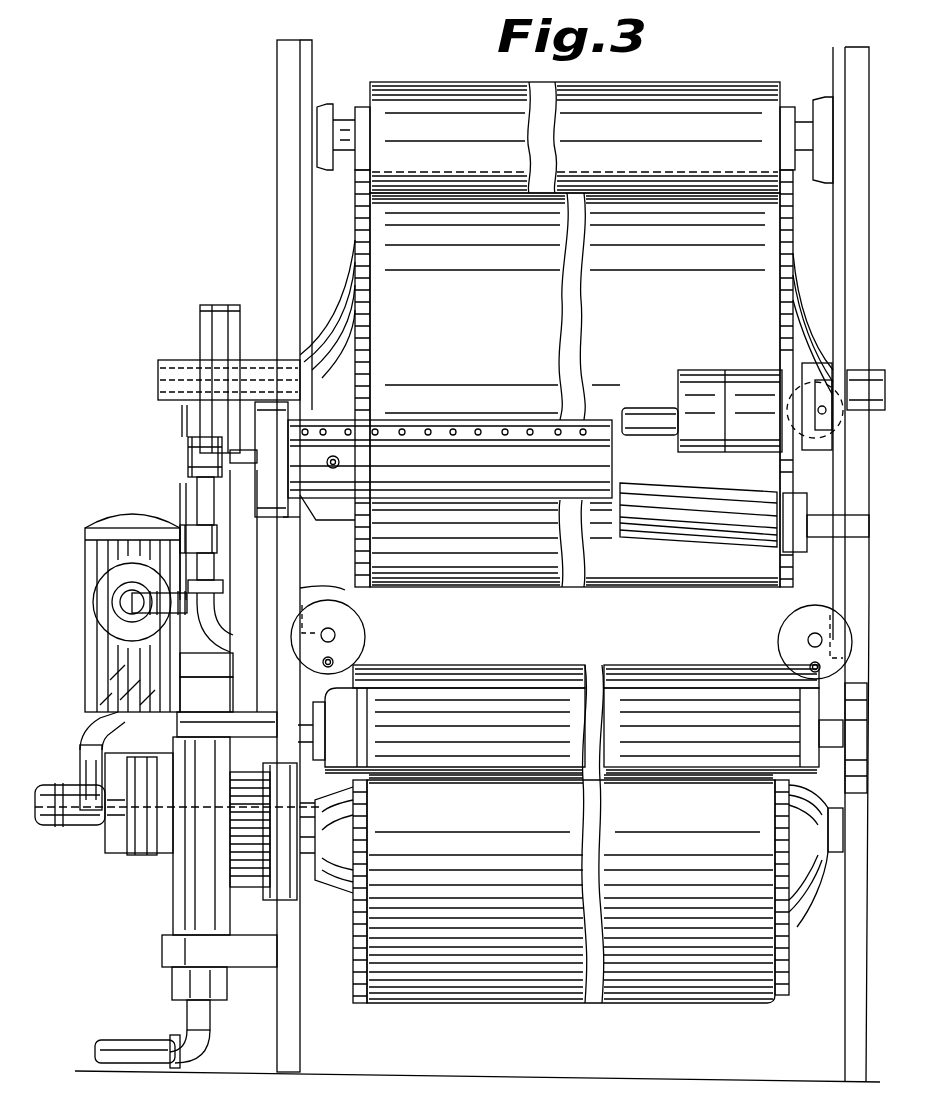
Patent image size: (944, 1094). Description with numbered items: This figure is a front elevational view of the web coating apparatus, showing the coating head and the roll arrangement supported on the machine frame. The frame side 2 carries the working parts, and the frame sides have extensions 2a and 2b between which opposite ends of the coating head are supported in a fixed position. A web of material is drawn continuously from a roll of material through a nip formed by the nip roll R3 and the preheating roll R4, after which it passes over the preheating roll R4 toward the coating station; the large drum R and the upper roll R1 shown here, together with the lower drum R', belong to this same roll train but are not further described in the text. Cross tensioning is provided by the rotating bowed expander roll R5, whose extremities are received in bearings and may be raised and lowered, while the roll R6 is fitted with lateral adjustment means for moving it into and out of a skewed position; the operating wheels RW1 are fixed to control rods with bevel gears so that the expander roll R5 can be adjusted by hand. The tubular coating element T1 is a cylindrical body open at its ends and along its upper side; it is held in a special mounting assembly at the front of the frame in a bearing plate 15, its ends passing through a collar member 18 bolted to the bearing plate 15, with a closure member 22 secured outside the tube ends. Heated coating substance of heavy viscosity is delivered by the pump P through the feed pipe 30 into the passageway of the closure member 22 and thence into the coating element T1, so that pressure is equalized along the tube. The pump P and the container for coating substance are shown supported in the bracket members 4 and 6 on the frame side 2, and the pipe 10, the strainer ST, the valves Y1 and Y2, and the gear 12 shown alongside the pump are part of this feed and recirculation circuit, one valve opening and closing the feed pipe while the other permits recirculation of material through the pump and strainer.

The frame side 2 is at (288, 1025).
The upper roller R1 is at (736, 92).
The drum R is at (566, 378).
The tubular coating element T1 is at (499, 420).
The feed pipe 30 is at (245, 471).
The roll R6 is at (741, 398).
The bowed expander roll R5 is at (685, 517).
The frame side extension 2a is at (858, 583).
The operating wheel RW1 is at (352, 628).
The frame side extension 2b is at (345, 590).
The preheating roll R4 is at (474, 668).
The nip roll R3 is at (662, 707).
The lower drum R' is at (575, 905).
The strainer tank ST is at (110, 558).
The supply pipe 10 is at (200, 320).
The valve Y1 is at (182, 425).
The valve Y2 is at (178, 492).
The closure member 22 is at (268, 520).
The collar member 18 is at (293, 520).
The bearing plate 15 is at (305, 545).
The bracket member 4 is at (248, 723).
The pump P is at (193, 838).
The gear 12 is at (235, 778).
The bracket member 6 is at (253, 955).